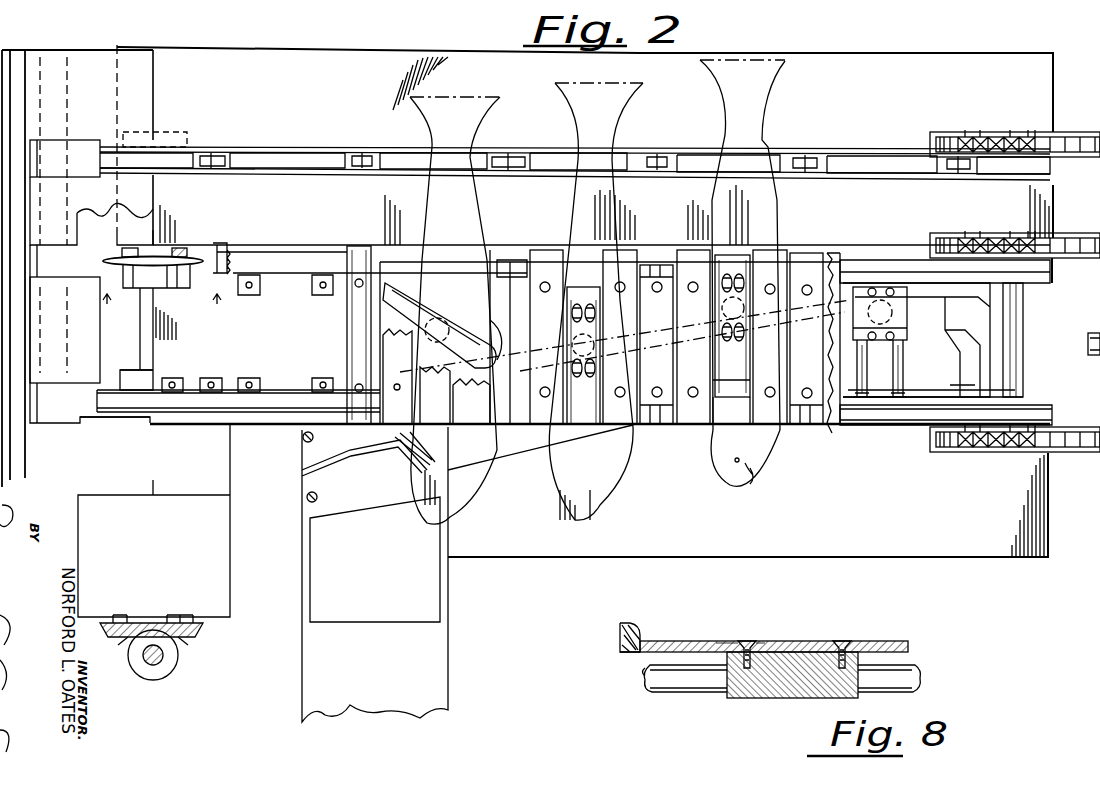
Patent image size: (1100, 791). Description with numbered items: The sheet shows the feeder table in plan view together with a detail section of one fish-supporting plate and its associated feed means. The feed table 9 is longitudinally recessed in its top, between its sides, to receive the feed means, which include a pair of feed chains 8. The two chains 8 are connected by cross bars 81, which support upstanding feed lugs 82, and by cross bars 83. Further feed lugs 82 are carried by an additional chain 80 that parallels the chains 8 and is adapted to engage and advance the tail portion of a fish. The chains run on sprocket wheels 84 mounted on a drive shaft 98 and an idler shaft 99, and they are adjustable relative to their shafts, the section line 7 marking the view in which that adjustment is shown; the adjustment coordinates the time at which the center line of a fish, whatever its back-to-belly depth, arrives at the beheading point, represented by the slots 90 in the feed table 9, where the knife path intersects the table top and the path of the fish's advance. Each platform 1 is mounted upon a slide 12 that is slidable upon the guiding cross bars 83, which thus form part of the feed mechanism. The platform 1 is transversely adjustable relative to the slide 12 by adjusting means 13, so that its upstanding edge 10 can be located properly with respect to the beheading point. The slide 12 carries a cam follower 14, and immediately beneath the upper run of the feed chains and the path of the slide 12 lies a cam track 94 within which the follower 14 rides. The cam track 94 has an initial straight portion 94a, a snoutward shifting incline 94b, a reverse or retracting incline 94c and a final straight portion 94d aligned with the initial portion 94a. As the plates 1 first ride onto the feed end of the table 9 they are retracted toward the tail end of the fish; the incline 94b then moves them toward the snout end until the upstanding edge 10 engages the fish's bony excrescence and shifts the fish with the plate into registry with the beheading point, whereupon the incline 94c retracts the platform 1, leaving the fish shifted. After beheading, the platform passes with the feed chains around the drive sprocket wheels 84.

In FIG. 2, the platform 1 is at (550, 427).
In FIG. 8, the platform 1 is at (680, 642).
In FIG. 2, the section line arrows 7 is at (161, 291).
In FIG. 2, the feed chains 8 is at (268, 407).
In FIG. 2, the feed table 9 is at (885, 62).
In FIG. 2, the upstanding edge 10 is at (573, 400).
In FIG. 8, the upstanding edge 10 is at (623, 623).
In FIG. 2, the slide 12 is at (905, 335).
In FIG. 8, the slide 12 is at (768, 697).
In FIG. 8, the adjusting means 13 is at (752, 645).
In FIG. 2, the cam follower 14 is at (450, 330).
In FIG. 2, the additional chain 80 is at (303, 156).
In FIG. 2, the cross bars 81 is at (508, 306).
In FIG. 2, the feed lugs 82 is at (503, 262).
In FIG. 2, the cross bars 83 is at (868, 365).
In FIG. 8, the cross bars 83 is at (905, 677).
In FIG. 2, the sprocket wheels 84 is at (133, 272).
In FIG. 2, the slots 90 is at (392, 447).
In FIG. 2, the cam track 94 is at (975, 300).
In FIG. 2, the straight portion 94a is at (963, 318).
In FIG. 2, the snoutward shifting incline 94b is at (696, 295).
In FIG. 2, the retracting incline 94c is at (432, 256).
In FIG. 2, the final straight portion 94d is at (263, 302).
In FIG. 2, the drive shaft 98 is at (160, 302).
In FIG. 2, the idler shaft 99 is at (1000, 316).